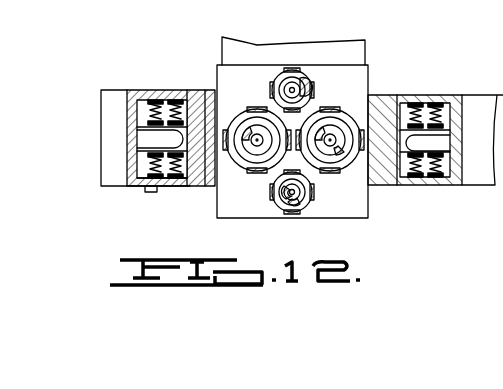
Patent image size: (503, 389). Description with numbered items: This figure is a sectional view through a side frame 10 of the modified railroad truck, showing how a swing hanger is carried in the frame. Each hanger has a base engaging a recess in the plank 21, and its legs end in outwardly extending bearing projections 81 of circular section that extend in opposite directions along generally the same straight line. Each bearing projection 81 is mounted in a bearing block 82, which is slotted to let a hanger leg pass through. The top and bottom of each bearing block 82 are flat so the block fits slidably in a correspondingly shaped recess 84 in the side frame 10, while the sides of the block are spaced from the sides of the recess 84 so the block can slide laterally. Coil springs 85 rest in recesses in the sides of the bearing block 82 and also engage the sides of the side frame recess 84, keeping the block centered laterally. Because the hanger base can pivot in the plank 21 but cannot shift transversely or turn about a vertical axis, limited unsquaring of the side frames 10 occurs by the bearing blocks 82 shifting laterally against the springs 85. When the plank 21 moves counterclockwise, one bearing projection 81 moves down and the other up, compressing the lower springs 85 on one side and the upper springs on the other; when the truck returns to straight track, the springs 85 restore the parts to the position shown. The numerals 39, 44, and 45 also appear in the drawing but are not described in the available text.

The side frame 10 is at (179, 94).
The plank 21 is at (363, 56).
The valve body 39 is at (352, 205).
The poppet valve 44 is at (258, 157).
The poppet valve 45 is at (348, 122).
The bearing projection 81 is at (140, 138).
The bearing block 82 is at (140, 118).
The recess 84 is at (133, 181).
The coil spring 85 is at (168, 98).